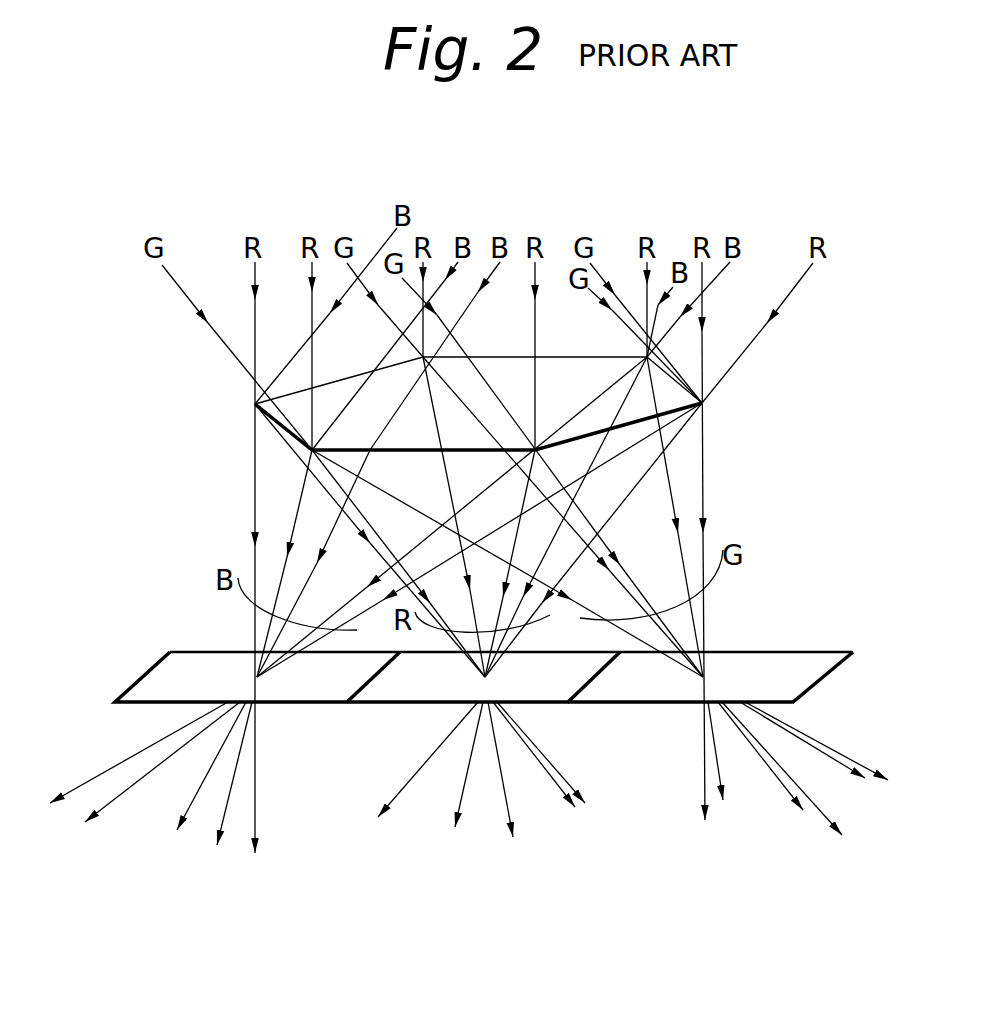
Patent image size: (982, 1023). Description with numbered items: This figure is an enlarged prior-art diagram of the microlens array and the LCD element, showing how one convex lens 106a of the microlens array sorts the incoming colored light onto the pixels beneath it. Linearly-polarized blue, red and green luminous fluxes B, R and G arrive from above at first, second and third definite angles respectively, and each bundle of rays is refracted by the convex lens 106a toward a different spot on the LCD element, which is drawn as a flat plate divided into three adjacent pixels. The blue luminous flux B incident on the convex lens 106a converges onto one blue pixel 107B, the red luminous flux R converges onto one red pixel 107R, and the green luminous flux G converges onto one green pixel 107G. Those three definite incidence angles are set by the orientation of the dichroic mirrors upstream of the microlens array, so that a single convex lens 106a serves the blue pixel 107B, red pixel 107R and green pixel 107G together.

The convex lens 106a is at (704, 408).
The blue pixel 107B is at (178, 684).
The red pixel 107R is at (410, 678).
The green pixel 107G is at (772, 660).